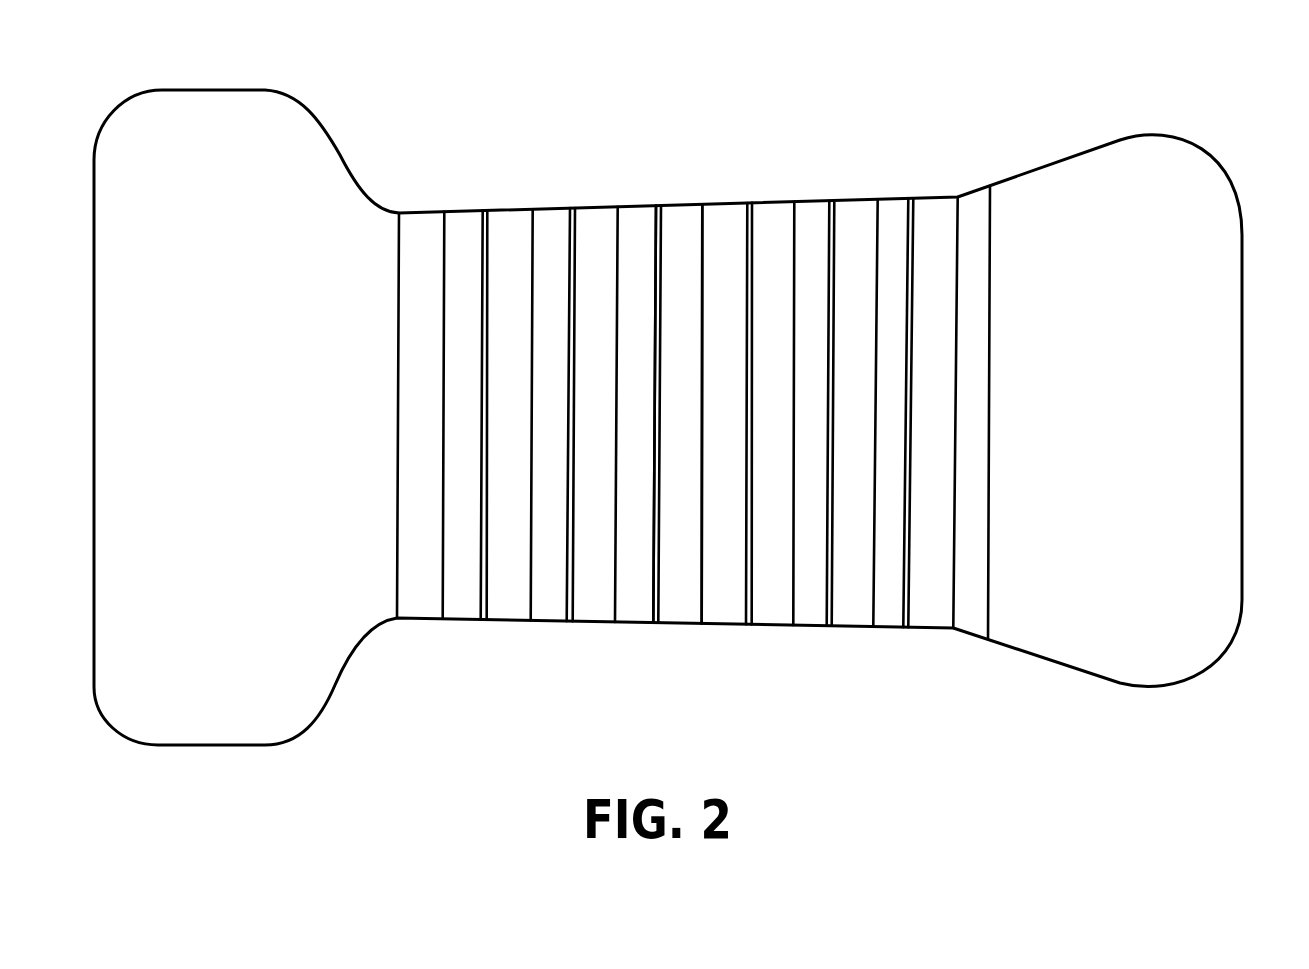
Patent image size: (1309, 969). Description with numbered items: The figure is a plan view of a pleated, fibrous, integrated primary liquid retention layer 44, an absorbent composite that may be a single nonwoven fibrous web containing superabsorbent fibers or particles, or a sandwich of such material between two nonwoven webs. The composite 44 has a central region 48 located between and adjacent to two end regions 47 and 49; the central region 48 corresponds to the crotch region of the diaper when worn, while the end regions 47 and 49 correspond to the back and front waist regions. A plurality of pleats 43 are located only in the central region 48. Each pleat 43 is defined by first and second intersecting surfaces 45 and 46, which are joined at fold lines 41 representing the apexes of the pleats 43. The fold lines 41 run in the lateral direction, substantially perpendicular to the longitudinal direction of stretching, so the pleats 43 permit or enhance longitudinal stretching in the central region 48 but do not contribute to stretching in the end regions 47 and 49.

The fold lines 41 is at (751, 205).
The pleats 43 is at (528, 212).
The primary liquid retention layer 44 is at (365, 631).
The first intersecting surface 45 is at (677, 622).
The second intersecting surface 46 is at (730, 625).
The end region 47 is at (113, 116).
The central region 48 is at (878, 198).
The end region 49 is at (1208, 149).